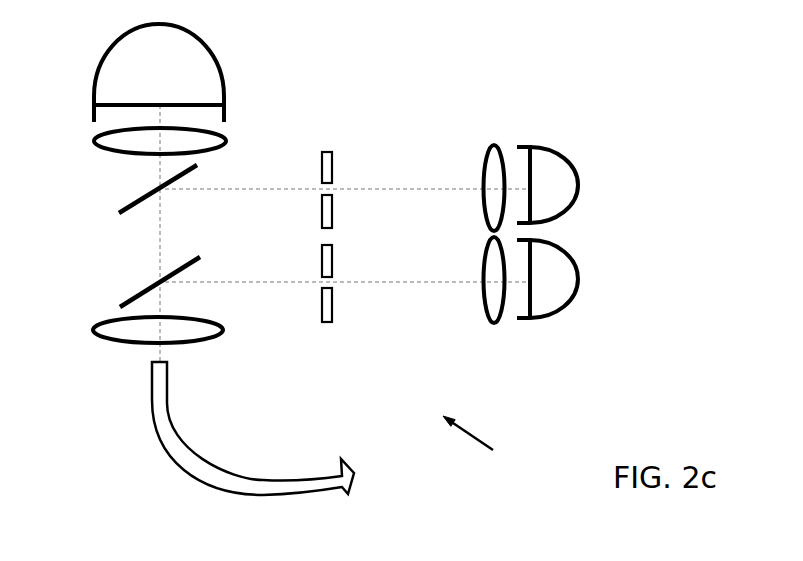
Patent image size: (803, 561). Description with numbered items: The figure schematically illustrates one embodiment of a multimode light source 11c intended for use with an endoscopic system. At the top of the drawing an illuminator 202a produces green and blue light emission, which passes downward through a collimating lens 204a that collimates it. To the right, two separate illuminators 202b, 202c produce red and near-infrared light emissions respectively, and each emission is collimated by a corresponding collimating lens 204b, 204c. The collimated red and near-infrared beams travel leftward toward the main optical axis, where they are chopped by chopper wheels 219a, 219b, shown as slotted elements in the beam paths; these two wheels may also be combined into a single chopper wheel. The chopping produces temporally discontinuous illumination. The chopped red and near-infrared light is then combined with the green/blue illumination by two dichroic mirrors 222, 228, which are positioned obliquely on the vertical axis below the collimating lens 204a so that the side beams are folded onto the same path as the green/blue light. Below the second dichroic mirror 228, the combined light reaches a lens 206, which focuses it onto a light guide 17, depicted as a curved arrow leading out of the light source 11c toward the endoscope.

The illuminator 202a is at (222, 75).
The collimating lens 204a is at (225, 142).
The dichroic mirror 222 is at (132, 205).
The dichroic mirror 228 is at (133, 297).
The lens 206 is at (217, 335).
The light guide 17 is at (197, 448).
The chopper wheel 219a is at (332, 159).
The chopper wheel 219b is at (332, 252).
The collimating lens 204b is at (498, 143).
The collimating lens 204c is at (497, 322).
The illuminator 202b is at (577, 168).
The illuminator 202c is at (577, 267).
The light source 11c is at (489, 437).